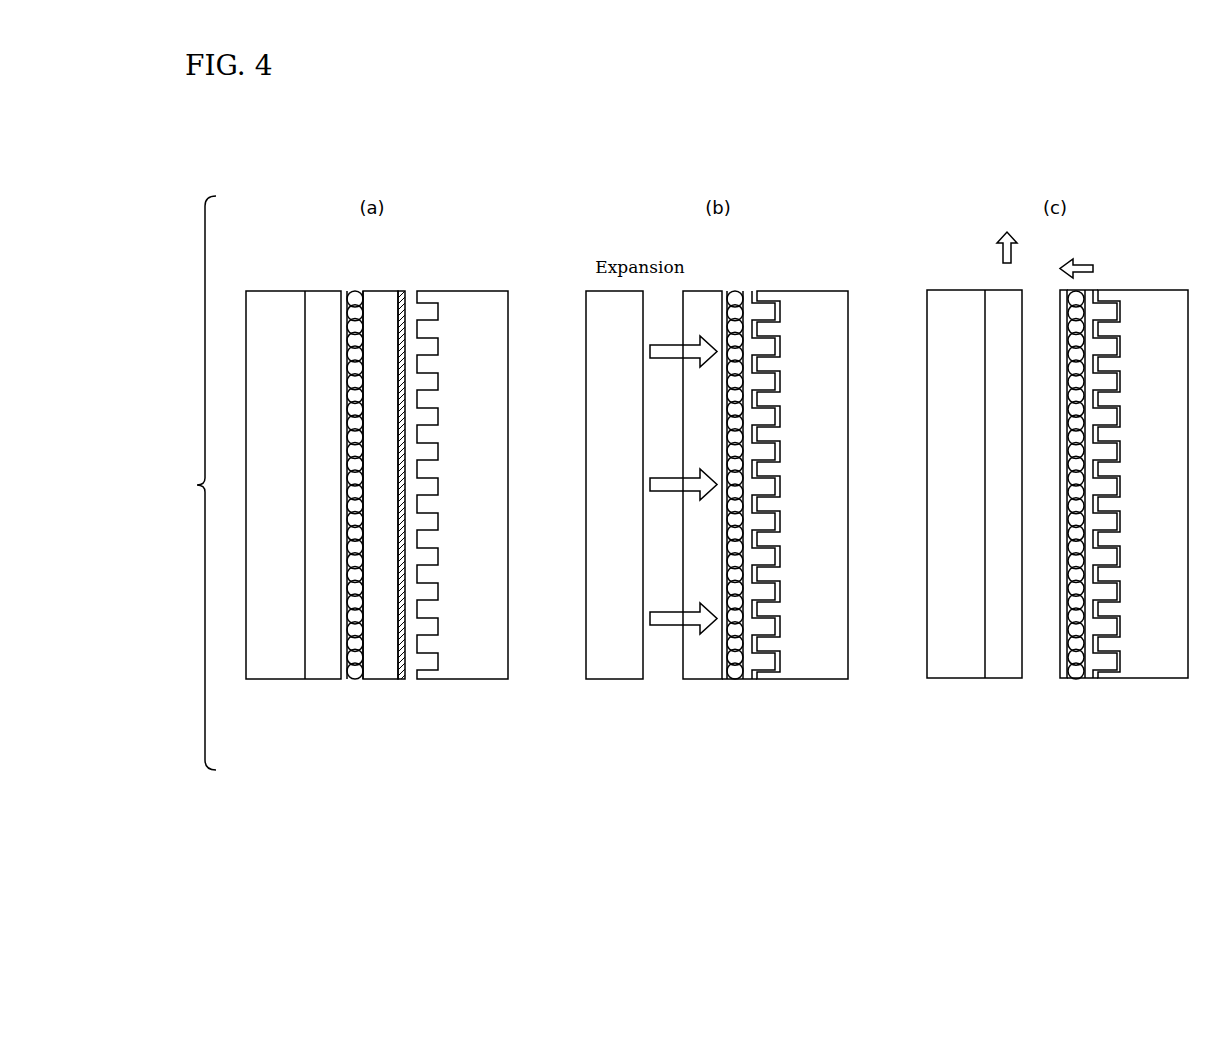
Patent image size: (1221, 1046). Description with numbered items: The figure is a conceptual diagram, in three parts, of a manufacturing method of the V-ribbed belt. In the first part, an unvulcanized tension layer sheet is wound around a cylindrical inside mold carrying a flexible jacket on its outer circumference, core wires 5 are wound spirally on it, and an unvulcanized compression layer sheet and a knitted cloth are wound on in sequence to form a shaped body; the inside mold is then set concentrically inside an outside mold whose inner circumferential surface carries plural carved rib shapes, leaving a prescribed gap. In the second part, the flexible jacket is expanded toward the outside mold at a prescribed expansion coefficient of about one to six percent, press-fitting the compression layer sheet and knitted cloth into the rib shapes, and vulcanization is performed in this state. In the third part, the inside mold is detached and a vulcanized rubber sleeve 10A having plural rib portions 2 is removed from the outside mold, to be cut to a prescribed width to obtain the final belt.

The vulcanized rubber sleeve 10A is at (1062, 686).
The core wires 5 is at (357, 672).
The rib portions 2 is at (1105, 549).